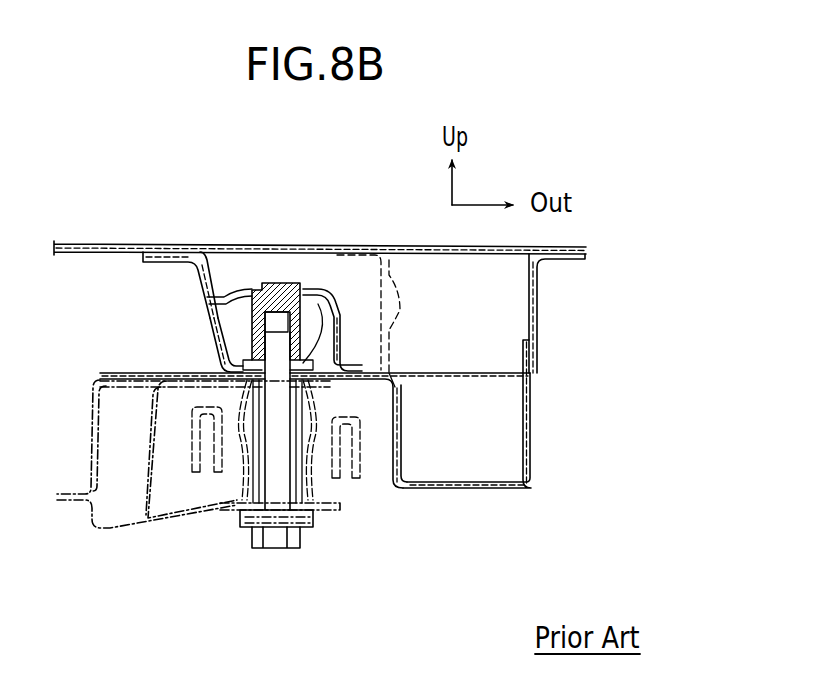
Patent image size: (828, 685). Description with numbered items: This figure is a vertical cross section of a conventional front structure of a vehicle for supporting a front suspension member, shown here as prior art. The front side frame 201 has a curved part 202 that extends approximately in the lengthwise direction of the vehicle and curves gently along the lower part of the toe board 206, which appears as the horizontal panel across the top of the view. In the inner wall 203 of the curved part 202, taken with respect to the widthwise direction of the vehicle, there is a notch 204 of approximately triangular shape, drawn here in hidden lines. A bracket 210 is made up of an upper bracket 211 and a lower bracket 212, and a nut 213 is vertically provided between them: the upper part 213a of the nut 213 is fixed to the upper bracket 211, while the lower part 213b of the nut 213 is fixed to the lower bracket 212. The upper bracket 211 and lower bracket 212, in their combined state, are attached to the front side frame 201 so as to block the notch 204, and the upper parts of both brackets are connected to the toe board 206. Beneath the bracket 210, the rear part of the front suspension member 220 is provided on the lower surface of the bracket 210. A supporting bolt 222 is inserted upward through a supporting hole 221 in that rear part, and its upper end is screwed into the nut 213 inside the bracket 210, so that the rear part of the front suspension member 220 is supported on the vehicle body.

The front side frame 201 is at (549, 296).
The curved part 202 is at (533, 423).
The inner wall 203 is at (403, 432).
The notch 204 is at (378, 252).
The toe board 206 is at (117, 243).
The bracket 210 is at (152, 312).
The upper bracket 211 is at (228, 320).
The lower bracket 212 is at (213, 354).
The nut 213 is at (251, 284).
The upper part of the nut 213a is at (303, 290).
The lower part of the nut 213b is at (313, 302).
The front suspension member 220 is at (98, 537).
The supporting hole 221 is at (234, 518).
The supporting bolt 222 is at (302, 540).